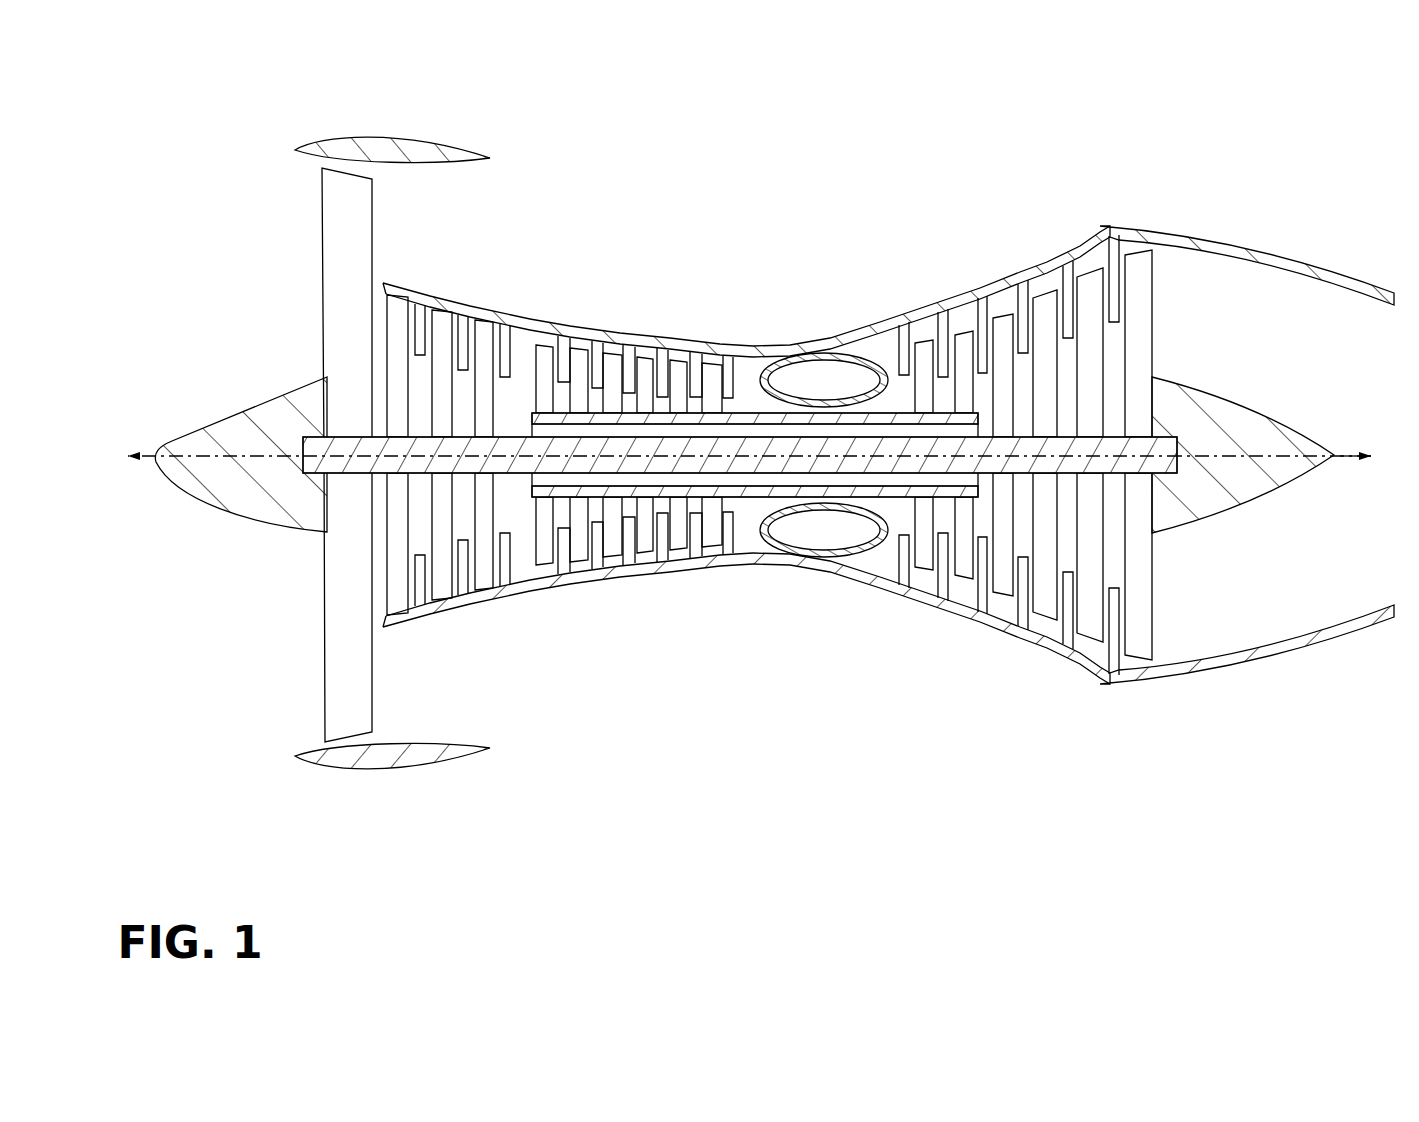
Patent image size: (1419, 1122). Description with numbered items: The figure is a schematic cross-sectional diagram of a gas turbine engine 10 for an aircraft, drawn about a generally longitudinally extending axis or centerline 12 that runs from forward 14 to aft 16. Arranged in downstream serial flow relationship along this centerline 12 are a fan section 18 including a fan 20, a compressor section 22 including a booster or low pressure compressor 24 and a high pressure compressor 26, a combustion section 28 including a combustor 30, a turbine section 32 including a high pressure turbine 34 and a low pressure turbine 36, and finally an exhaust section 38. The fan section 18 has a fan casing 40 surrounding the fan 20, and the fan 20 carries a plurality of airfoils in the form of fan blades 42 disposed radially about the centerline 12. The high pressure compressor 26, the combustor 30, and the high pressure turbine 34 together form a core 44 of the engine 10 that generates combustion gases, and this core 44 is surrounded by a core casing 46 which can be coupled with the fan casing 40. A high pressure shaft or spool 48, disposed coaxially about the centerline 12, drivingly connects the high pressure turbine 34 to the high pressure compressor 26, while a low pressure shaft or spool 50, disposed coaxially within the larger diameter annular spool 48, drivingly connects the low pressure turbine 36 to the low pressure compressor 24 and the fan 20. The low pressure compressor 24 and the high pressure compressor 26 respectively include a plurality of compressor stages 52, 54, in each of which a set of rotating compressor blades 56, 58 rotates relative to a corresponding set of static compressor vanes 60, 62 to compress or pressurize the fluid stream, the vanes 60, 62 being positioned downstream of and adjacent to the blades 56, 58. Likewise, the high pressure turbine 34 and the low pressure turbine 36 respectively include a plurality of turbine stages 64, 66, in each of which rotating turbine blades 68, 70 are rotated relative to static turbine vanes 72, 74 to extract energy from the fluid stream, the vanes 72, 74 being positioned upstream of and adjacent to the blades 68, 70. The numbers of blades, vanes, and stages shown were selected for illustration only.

The gas turbine engine 10 is at (184, 67).
The centerline 12 is at (218, 452).
The forward 14 is at (732, 457).
The aft 16 is at (1375, 456).
The fan section 18 is at (375, 818).
The fan 20 is at (314, 234).
The compressor section 22 is at (380, 818).
The low pressure compressor 24 is at (520, 614).
The high pressure compressor 26 is at (687, 577).
The combustion section 28 is at (912, 818).
The combustor 30 is at (880, 351).
The turbine section 32 is at (1147, 818).
The high pressure turbine 34 is at (899, 600).
The low pressure turbine 36 is at (1035, 648).
The exhaust section 38 is at (1148, 818).
The fan casing 40 is at (396, 133).
The fan blades 42 is at (338, 683).
The core 44 is at (977, 677).
The core casing 46 is at (803, 338).
The high pressure shaft 48 is at (740, 398).
The low pressure shaft 50 is at (513, 436).
The compressor stages 52 is at (383, 260).
The compressor stages 54 is at (545, 306).
The compressor blades 56 is at (397, 305).
The compressor blades 58 is at (548, 350).
The compressor vanes 60 is at (427, 307).
The compressor vanes 62 is at (565, 365).
The turbine stages 64 is at (928, 300).
The turbine stages 66 is at (1062, 250).
The turbine blades 68 is at (962, 350).
The turbine blades 70 is at (1090, 297).
The turbine vanes 72 is at (943, 345).
The turbine vanes 74 is at (1070, 335).